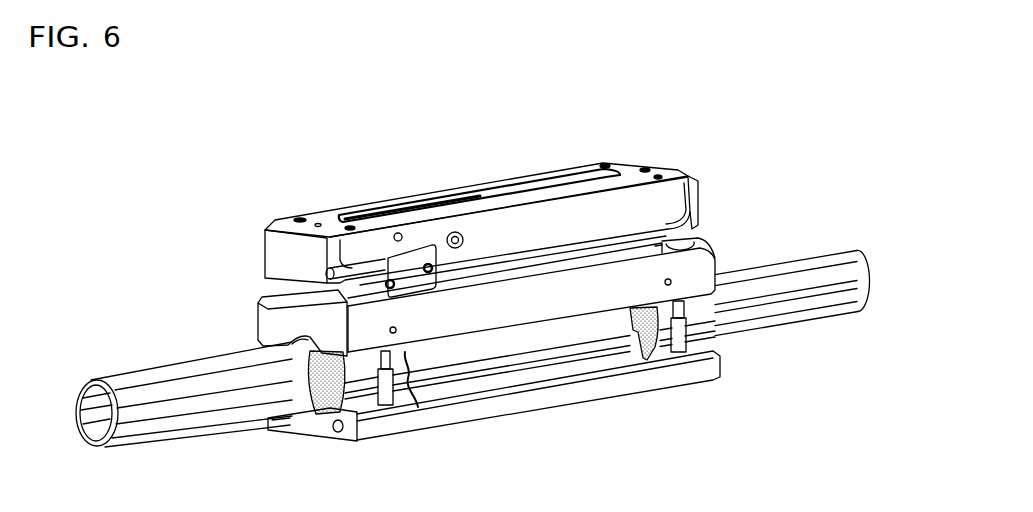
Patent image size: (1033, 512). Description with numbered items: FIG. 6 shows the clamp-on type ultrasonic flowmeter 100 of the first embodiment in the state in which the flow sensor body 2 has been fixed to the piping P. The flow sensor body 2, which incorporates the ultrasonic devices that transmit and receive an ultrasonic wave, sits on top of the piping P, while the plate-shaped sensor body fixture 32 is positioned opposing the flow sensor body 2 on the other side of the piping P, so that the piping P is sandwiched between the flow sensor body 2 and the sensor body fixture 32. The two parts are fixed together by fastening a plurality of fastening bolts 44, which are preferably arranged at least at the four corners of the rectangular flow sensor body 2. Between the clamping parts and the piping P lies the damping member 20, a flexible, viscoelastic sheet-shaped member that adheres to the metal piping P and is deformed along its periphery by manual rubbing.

The clamp-on type ultrasonic flowmeter 100 is at (246, 168).
The flow sensor body 2 is at (641, 200).
The piping P is at (186, 385).
The damping member 20 is at (322, 400).
The fastening bolt 44 is at (385, 396).
The sensor body fixture 32 is at (547, 410).